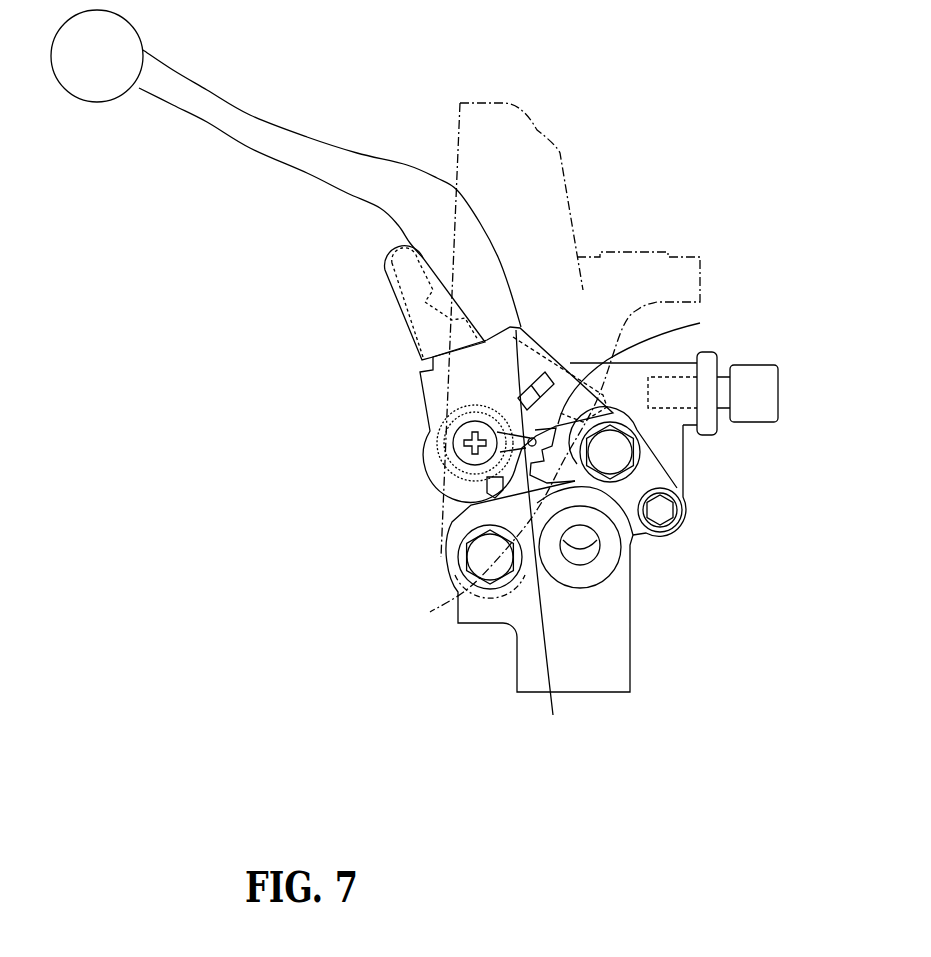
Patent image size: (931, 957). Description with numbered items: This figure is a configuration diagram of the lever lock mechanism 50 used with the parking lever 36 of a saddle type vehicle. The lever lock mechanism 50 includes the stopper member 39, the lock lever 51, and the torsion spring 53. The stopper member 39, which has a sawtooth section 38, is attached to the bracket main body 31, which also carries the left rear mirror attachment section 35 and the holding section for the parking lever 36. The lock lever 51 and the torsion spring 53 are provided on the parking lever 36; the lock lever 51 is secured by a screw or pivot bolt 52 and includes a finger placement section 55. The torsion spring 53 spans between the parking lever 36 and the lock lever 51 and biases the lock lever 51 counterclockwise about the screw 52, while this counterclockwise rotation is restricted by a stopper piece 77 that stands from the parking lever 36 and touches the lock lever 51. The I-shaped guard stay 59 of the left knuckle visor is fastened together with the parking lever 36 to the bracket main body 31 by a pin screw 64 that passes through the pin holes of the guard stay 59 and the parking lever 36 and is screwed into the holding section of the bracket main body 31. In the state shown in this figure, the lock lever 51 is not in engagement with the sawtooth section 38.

The bracket main body 31 is at (602, 638).
The left rear mirror attachment section 35 is at (583, 555).
The parking lever 36 is at (280, 148).
The sawtooth section 38 is at (700, 323).
The stopper member 39 is at (648, 476).
The lever lock mechanism 50 is at (362, 423).
The lock lever 51 is at (460, 380).
The pivot bolt 52 is at (458, 450).
The torsion spring 53 is at (553, 715).
The finger placement section 55 is at (420, 308).
The guard stay 59 is at (535, 130).
The pin screw 64 is at (487, 570).
The stopper piece 77 is at (440, 492).